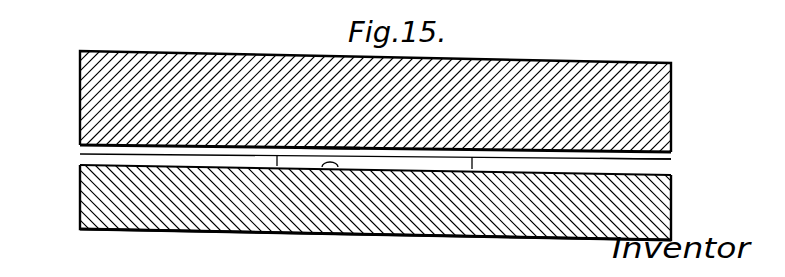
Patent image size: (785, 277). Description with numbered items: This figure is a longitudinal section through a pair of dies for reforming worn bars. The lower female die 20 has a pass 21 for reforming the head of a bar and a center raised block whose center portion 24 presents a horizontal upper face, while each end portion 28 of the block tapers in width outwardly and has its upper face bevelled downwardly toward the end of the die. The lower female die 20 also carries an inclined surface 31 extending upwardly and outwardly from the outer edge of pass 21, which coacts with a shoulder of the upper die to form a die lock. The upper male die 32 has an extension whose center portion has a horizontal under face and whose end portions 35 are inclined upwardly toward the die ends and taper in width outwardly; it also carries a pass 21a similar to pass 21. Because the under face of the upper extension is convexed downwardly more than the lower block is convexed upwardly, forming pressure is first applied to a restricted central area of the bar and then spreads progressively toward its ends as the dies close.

The upper male die 32 is at (645, 97).
The end portion of extension 35 is at (110, 145).
The inclined surface 31 is at (328, 150).
The pass 21 is at (92, 156).
The pass 21a is at (662, 157).
The end portion of block 28 is at (113, 165).
The center portion of block 24 is at (330, 167).
The lower female die 20 is at (125, 207).